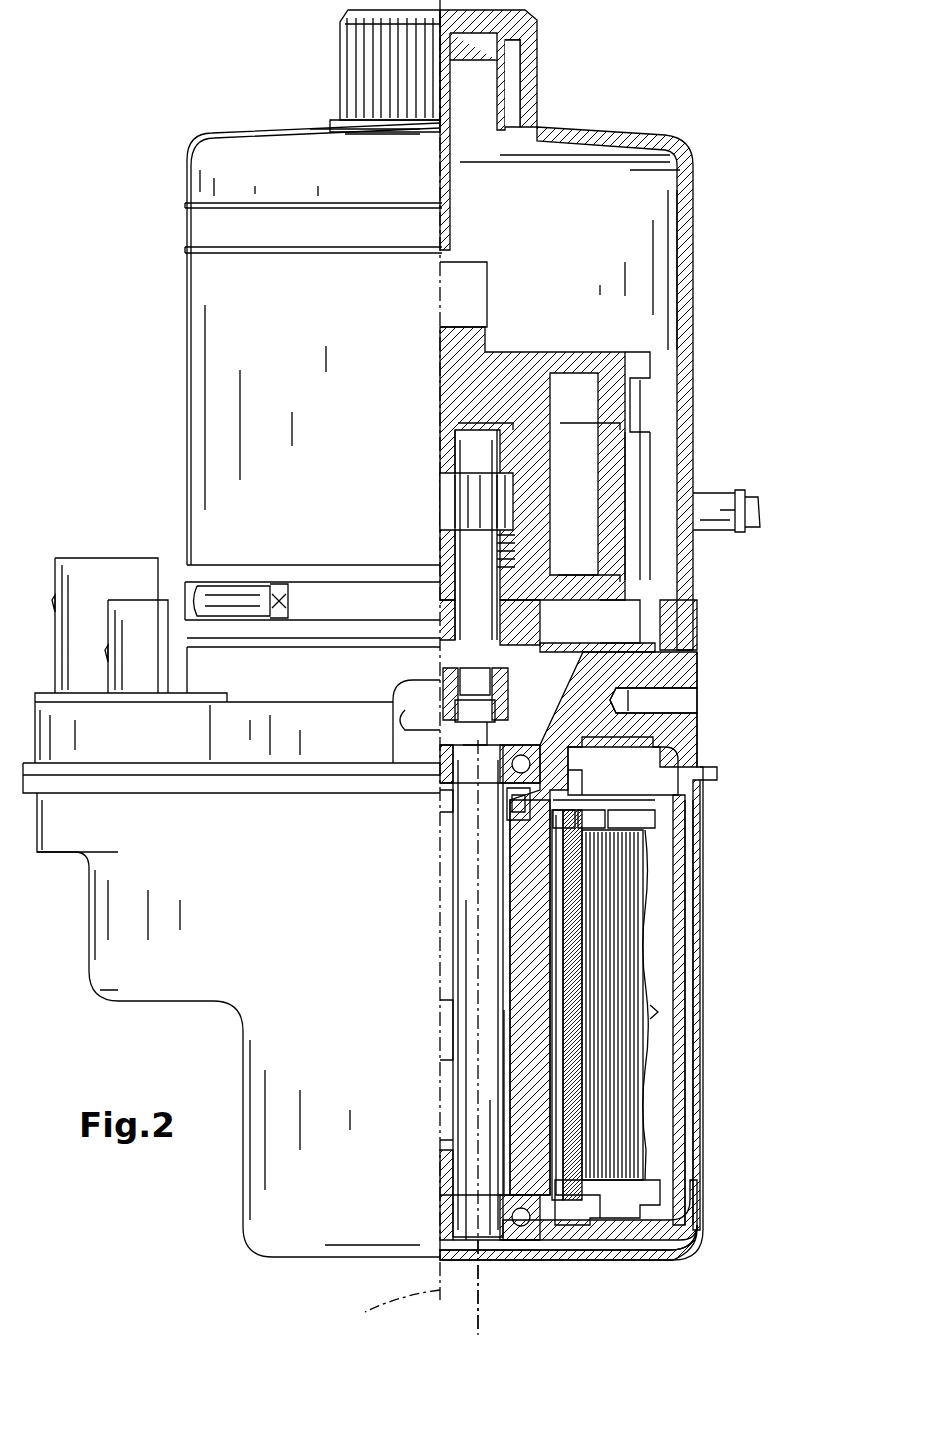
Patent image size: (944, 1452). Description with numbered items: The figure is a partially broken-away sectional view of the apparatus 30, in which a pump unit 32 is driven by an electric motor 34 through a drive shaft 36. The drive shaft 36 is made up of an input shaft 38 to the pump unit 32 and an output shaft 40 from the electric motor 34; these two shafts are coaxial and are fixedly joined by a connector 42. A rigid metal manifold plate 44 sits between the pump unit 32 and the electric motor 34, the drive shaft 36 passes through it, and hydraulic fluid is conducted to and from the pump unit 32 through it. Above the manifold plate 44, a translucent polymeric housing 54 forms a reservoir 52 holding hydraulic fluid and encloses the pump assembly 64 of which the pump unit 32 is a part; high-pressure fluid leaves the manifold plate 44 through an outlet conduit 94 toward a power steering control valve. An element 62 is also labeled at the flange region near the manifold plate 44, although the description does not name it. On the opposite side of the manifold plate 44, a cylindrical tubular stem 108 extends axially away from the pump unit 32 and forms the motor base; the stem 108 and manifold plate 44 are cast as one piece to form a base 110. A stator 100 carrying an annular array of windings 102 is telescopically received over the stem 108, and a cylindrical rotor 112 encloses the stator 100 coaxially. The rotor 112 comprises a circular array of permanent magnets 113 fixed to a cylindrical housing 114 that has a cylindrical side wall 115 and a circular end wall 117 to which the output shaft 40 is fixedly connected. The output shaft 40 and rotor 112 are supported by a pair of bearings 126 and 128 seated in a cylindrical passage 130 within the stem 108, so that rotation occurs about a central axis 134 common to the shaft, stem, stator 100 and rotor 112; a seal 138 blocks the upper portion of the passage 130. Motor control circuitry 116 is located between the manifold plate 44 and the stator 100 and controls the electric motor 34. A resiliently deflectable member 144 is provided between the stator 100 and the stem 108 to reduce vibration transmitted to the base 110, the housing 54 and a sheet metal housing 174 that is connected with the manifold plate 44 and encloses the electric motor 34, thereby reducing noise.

The apparatus 30 is at (118, 320).
The pump unit 32 is at (436, 496).
The electric motor 34 is at (689, 912).
The drive shaft 36 is at (446, 988).
The input shaft 38 is at (470, 560).
The output shaft 40 is at (470, 945).
The connector 42 is at (435, 682).
The manifold plate 44 is at (680, 730).
The reservoir 52 is at (630, 192).
The housing 54 is at (212, 172).
The flange 62 is at (560, 668).
The pump assembly 64 is at (656, 368).
The outlet conduit 94 is at (718, 493).
The stator 100 is at (660, 860).
The windings 102 is at (640, 900).
The tubular stem 108 is at (528, 880).
The base 110 is at (702, 714).
The rotor 112 is at (689, 1030).
The permanent magnets 113 is at (640, 990).
The housing 114 is at (689, 1103).
The side wall 115 is at (680, 945).
The motor control circuitry 116 is at (120, 568).
The end wall 117 is at (575, 1240).
The bearing 126 is at (438, 750).
The bearing 128 is at (446, 1140).
The cylindrical passage 130 is at (446, 1040).
The central axis 134 is at (470, 1288).
The seal 138 is at (440, 810).
The resiliently deflectable member 144 is at (600, 1128).
The sheet metal housing 174 is at (130, 922).